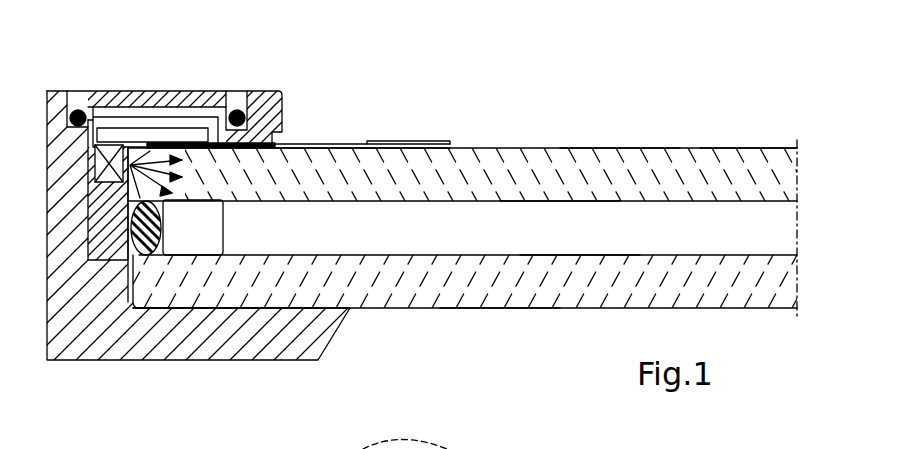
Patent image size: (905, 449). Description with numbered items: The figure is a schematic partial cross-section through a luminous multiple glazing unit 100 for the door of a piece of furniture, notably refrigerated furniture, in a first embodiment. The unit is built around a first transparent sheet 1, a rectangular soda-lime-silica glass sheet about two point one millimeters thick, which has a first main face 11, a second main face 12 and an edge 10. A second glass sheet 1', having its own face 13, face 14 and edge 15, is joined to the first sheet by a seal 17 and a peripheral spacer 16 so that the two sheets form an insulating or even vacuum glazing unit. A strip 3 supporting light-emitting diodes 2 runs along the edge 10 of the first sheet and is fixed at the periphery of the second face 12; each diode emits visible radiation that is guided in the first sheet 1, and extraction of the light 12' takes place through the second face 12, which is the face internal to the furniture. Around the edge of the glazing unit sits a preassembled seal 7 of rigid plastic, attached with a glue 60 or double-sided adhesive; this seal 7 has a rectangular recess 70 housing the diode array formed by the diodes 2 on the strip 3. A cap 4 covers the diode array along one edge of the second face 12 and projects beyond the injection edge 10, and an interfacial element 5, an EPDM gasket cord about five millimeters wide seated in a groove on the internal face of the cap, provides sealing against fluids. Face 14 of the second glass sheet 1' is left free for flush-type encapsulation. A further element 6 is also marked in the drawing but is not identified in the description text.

The first transparent sheet 1 is at (470, 205).
The second glass sheet 1' is at (470, 312).
The light-emitting diodes 2 is at (92, 160).
The strip 3 is at (137, 137).
The cap 4 is at (110, 97).
The interfacial element 5 is at (78, 109).
The adhesive layer 6 is at (197, 143).
The seal 7 is at (277, 110).
The edge 10 is at (97, 193).
The first main face 11 is at (572, 202).
The second main face 12 is at (620, 118).
The extraction of the light 12' is at (748, 118).
The face 13 is at (590, 253).
The face 14 is at (495, 308).
The edge 15 is at (393, 142).
The peripheral spacer 16 is at (207, 217).
The seal 17 is at (143, 257).
The glue 60 is at (300, 143).
The recess 70 is at (173, 113).
The luminous multiple glazing unit 100 is at (686, 104).